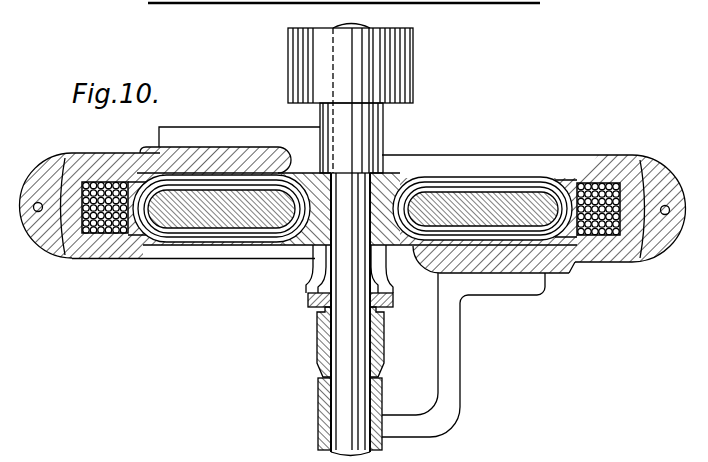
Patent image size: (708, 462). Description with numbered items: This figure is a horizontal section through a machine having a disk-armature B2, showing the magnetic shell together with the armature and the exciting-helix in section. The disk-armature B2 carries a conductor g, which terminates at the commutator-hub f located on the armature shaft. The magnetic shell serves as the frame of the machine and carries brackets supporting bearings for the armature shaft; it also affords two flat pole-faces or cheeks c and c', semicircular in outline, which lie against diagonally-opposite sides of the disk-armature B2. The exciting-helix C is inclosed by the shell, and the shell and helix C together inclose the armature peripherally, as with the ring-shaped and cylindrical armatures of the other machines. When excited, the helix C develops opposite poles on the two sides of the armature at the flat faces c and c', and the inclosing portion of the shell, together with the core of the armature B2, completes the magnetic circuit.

The flat pole-face or cheek c is at (230, 138).
The exciting-helix C is at (116, 235).
The conductor g is at (352, 208).
The disk-armature B2 is at (318, 243).
The commutator-hub f is at (383, 343).
The flat pole-face or cheek c' is at (475, 341).